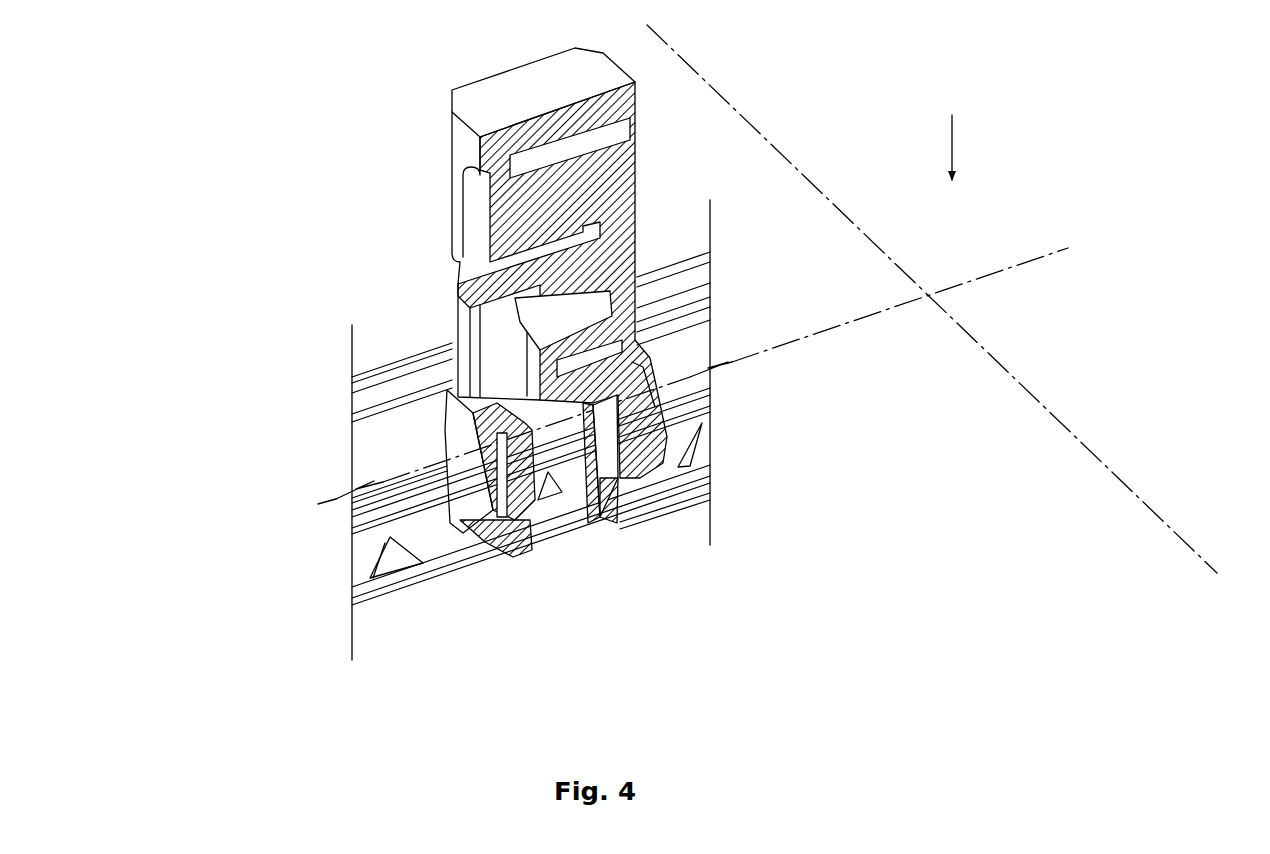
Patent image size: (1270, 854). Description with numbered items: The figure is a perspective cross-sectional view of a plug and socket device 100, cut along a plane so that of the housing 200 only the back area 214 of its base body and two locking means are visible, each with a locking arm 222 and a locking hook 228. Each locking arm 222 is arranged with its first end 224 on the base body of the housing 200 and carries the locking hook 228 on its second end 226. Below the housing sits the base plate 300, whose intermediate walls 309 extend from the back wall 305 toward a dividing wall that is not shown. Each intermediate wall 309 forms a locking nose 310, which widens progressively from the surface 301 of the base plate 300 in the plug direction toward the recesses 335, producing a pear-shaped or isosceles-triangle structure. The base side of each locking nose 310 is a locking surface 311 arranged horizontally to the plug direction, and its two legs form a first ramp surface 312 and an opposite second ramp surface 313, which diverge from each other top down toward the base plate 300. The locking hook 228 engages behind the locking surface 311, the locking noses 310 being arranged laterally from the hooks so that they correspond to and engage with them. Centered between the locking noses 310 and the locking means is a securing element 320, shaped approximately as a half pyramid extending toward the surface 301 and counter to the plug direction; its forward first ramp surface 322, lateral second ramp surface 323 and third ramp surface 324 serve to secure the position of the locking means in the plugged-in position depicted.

The plug and socket device 100 is at (798, 97).
The housing 200 is at (160, 100).
The back area 214 is at (467, 102).
The locking arm 222 is at (603, 520).
The first end 224 is at (457, 355).
The second end 226 is at (527, 565).
The locking hook 228 is at (626, 495).
The base plate 300 is at (334, 352).
The surface 301 is at (658, 265).
The back wall 305 is at (690, 320).
The intermediate wall 309 is at (445, 390).
The locking nose 310 is at (500, 530).
The locking surface 311 is at (468, 532).
The first ramp surface 312 is at (530, 533).
The second ramp surface 313 is at (455, 497).
The securing element 320 is at (543, 500).
The first ramp surface 322 is at (395, 558).
The second lateral ramp surface 323 is at (410, 530).
The third ramp surface 324 is at (452, 505).
The recess 335 is at (377, 447).